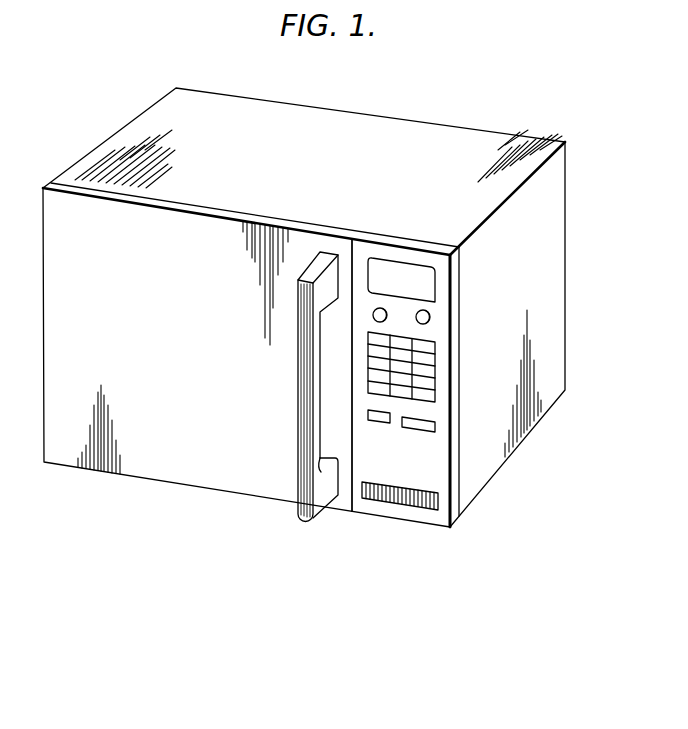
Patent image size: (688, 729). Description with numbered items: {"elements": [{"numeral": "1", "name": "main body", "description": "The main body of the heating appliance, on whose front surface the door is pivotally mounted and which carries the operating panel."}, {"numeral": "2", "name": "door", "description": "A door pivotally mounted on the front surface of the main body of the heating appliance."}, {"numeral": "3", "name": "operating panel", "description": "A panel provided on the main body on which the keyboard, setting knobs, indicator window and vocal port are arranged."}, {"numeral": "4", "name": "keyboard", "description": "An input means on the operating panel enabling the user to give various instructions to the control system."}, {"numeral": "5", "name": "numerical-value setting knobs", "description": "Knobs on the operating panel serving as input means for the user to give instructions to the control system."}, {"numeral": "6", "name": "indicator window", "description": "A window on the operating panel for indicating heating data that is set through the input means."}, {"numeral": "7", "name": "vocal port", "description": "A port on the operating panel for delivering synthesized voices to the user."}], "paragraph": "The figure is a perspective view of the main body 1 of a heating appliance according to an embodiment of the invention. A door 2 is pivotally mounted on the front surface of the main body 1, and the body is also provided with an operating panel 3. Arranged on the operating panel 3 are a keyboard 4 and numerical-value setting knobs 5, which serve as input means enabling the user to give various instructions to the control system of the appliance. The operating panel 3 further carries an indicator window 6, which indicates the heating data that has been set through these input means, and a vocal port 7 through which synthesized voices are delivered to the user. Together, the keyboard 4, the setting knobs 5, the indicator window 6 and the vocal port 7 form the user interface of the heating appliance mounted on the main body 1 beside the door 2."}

The microwave oven body 1 is at (335, 127).
The door 2 is at (167, 472).
The control panel 3 is at (383, 520).
The key switches 4 is at (427, 371).
The knobs 5 is at (385, 306).
The display window 6 is at (396, 262).
The vent 7 is at (440, 503).